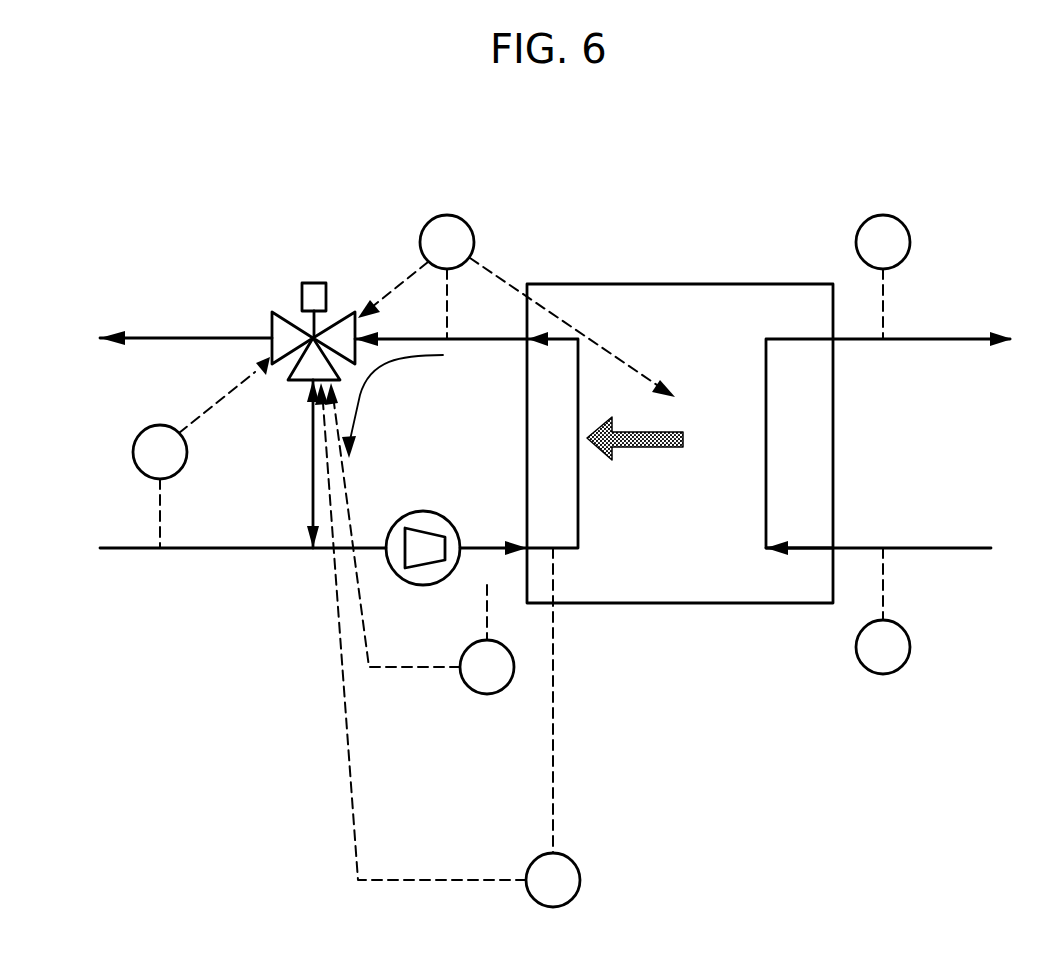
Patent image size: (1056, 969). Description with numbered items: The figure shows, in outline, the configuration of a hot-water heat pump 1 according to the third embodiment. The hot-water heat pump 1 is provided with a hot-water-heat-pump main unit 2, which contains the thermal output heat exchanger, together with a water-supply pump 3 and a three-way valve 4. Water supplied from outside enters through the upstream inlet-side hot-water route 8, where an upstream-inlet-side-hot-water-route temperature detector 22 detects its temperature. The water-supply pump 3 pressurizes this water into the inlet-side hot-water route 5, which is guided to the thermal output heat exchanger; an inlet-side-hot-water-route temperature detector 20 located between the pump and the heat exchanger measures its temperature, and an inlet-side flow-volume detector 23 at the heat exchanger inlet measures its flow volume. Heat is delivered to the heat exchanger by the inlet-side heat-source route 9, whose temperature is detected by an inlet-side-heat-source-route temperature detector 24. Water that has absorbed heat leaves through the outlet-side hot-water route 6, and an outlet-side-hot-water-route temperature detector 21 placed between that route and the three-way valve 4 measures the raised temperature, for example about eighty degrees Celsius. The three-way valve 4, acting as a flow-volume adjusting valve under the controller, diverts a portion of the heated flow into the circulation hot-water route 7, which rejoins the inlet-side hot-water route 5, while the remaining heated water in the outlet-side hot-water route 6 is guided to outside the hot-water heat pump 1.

The hot-water heat pump 1 is at (358, 160).
The hot-water-heat-pump main unit 2 is at (690, 603).
The water-supply pump 3 is at (423, 511).
The three-way valve 4 is at (313, 281).
The inlet-side hot-water route 5 is at (493, 548).
The outlet-side hot-water route 6 is at (467, 341).
The circulation hot-water route 7 is at (313, 445).
The upstream inlet-side hot-water route 8 is at (207, 550).
The inlet-side heat-source route 9 is at (982, 550).
The inlet-side-hot-water-route temperature detector 20 is at (487, 694).
The outlet-side-hot-water-route temperature detector 21 is at (475, 242).
The upstream-inlet-side-hot-water-route temperature detector 22 is at (133, 452).
The inlet-side flow-volume detector 23 is at (580, 880).
The inlet-side-heat-source-route temperature detector 24 is at (883, 674).